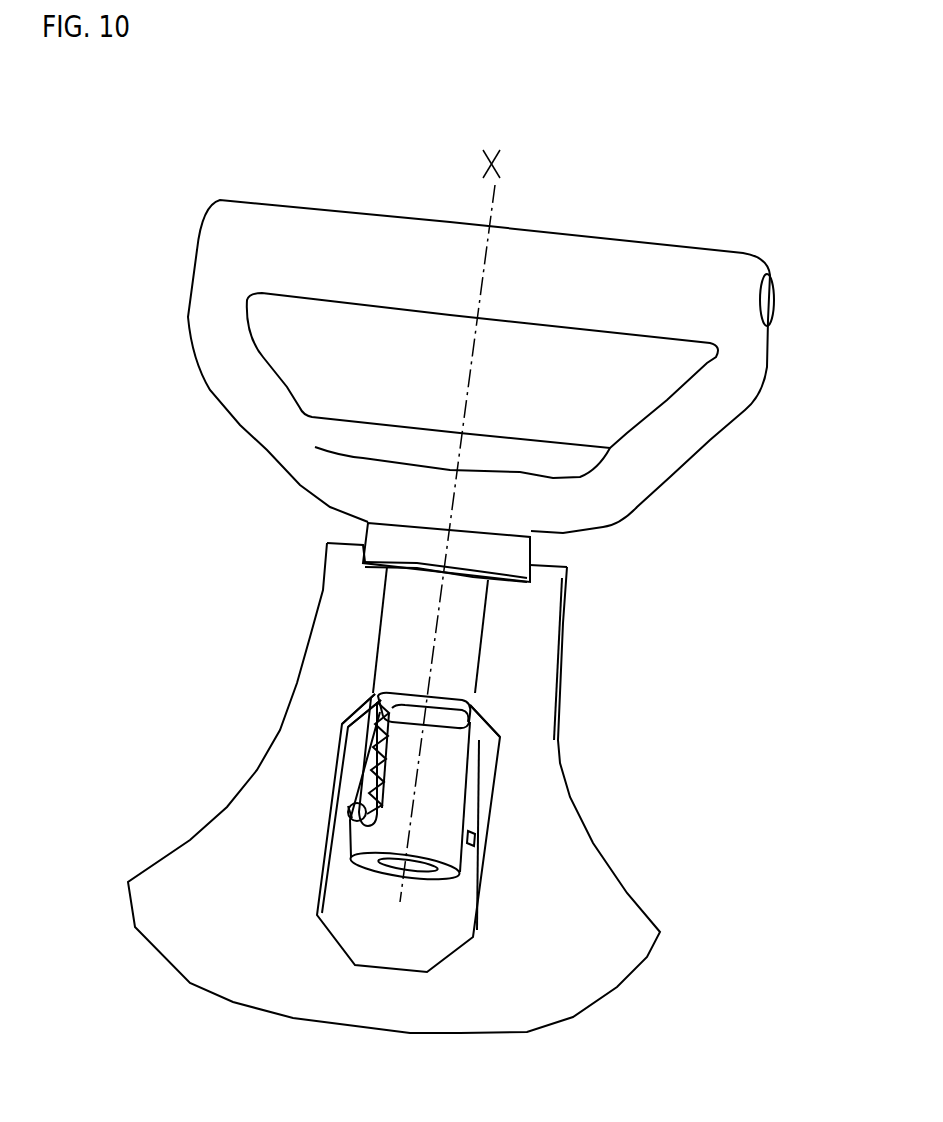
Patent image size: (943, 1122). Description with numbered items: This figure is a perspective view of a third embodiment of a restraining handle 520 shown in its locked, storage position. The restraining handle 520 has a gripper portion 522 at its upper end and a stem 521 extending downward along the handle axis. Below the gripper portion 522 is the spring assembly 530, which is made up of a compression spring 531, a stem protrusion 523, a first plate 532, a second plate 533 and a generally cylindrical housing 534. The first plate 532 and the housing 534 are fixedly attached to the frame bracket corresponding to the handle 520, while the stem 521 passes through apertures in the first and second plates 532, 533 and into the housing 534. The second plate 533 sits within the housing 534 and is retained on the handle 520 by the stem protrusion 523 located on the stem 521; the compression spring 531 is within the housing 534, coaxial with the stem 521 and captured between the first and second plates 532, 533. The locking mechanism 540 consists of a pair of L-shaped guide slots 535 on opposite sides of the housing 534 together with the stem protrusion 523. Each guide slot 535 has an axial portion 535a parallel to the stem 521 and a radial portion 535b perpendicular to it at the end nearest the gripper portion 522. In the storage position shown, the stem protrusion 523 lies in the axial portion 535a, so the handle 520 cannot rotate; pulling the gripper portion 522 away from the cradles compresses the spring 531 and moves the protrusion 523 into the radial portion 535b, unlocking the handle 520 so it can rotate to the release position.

The restraining handle 520 is at (363, 175).
The gripper portion 522 is at (237, 377).
The spring assembly 530 is at (347, 613).
The compression spring 531 is at (373, 693).
The first plate 532 is at (365, 528).
The second plate 533 is at (362, 798).
The housing 534 is at (467, 640).
The L-shaped guide slot 535 is at (366, 765).
The axial portion 535a is at (350, 720).
The radial portion 535b is at (483, 720).
The stem 521 is at (413, 867).
The stem protrusion 523 is at (348, 812).
The locking mechanism 540 is at (160, 666).